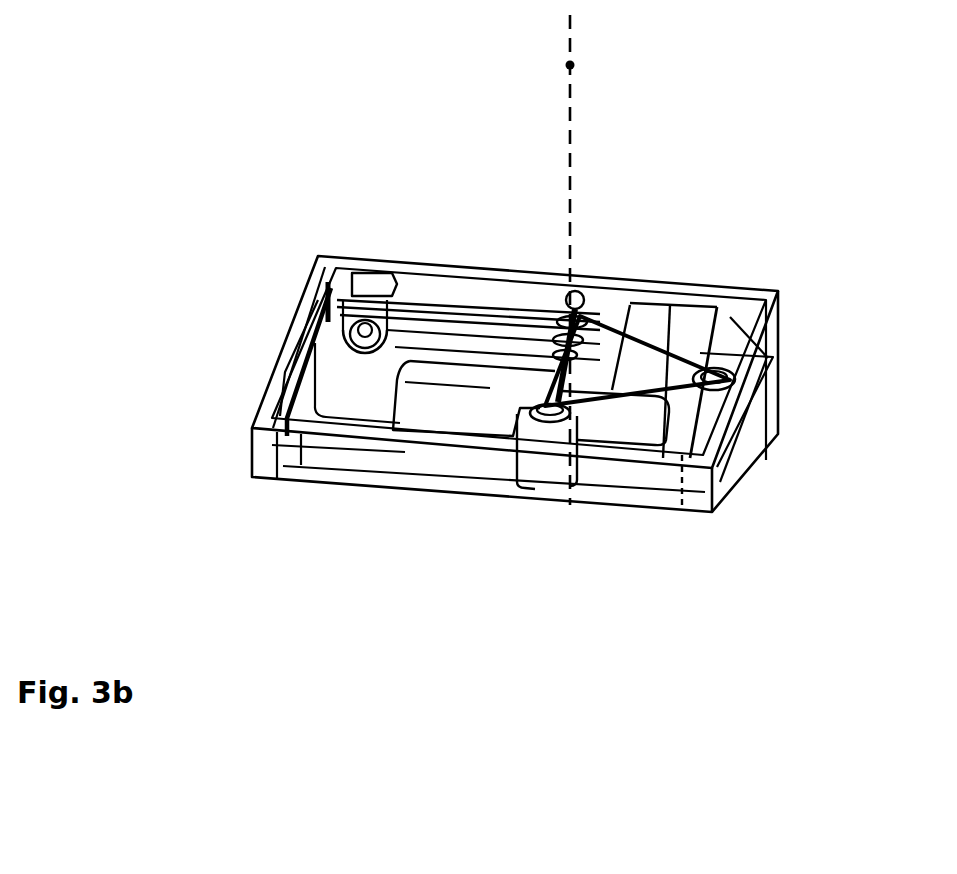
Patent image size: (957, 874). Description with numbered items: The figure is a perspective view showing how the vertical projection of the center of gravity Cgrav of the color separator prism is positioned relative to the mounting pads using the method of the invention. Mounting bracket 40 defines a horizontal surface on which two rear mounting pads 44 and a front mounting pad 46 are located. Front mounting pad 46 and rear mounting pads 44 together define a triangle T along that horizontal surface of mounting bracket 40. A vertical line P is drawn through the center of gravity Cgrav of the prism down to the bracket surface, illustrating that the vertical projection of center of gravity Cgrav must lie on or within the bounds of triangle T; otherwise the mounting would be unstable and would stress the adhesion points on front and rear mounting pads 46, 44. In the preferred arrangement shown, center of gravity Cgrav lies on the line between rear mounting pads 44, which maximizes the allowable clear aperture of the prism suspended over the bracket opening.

The mounting bracket 40 is at (365, 257).
The rear mounting pads 44 is at (598, 314).
The front mounting pad 46 is at (757, 353).
The triangle T is at (663, 352).
The vertical axis through centre of gravity P is at (570, 170).
The center of gravity Cgrav is at (565, 320).